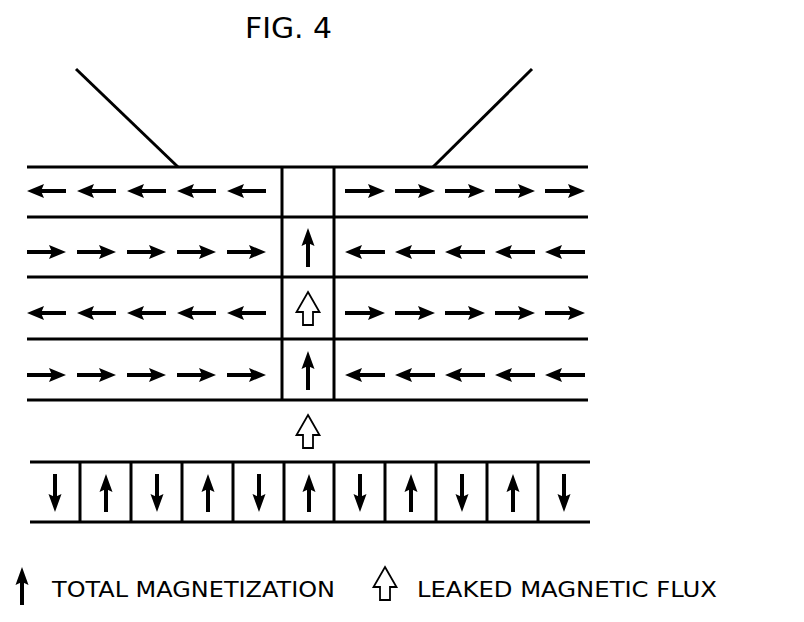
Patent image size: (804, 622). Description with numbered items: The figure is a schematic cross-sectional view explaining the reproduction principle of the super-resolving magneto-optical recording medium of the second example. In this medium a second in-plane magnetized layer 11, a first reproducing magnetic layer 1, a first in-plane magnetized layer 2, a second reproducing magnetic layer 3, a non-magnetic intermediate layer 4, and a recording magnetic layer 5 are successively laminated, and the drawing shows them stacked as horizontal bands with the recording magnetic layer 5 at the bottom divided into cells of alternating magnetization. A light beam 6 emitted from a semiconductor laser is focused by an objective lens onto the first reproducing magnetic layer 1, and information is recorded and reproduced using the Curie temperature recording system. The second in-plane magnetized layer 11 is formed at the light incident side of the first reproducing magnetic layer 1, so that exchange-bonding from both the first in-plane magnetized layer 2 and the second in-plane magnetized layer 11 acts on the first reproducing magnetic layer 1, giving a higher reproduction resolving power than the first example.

The first reproducing magnetic layer 1 is at (598, 251).
The first in-plane magnetized layer 2 is at (593, 311).
The second reproducing magnetic layer 3 is at (592, 367).
The non-magnetic intermediate layer 4 is at (587, 434).
The recording magnetic layer 5 is at (590, 490).
The light beam 6 is at (503, 98).
The second in-plane magnetized layer 11 is at (598, 188).